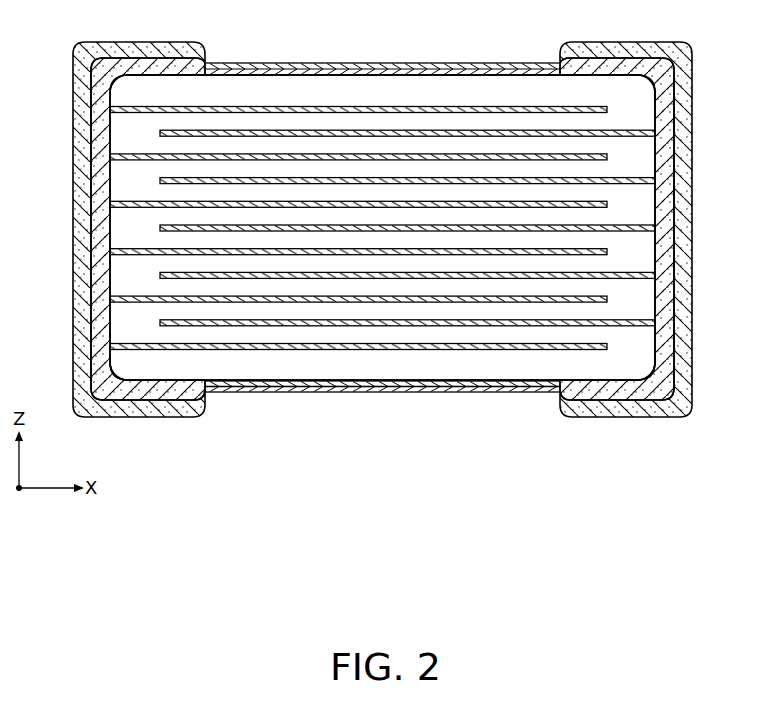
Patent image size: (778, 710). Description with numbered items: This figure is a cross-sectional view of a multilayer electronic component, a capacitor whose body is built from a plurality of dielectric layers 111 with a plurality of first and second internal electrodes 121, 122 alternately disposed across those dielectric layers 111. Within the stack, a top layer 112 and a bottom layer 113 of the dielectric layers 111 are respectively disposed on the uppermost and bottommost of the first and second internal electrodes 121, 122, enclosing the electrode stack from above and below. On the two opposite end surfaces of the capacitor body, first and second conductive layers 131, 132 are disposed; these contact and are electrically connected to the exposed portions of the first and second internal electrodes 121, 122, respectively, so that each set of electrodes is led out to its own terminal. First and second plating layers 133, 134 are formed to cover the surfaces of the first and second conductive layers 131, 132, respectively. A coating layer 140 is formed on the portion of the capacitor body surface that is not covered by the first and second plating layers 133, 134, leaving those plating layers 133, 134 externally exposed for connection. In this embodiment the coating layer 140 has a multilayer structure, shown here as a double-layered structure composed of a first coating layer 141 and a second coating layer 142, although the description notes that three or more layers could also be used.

The dielectric layer 111 is at (632, 105).
The top layer 112 is at (293, 93).
The bottom layer 113 is at (317, 367).
The first internal electrode 121 is at (372, 107).
The second internal electrode 122 is at (420, 131).
The first conductive layer 131 is at (163, 388).
The second conductive layer 132 is at (602, 394).
The first plating layer 133 is at (110, 410).
The second plating layer 134 is at (653, 418).
The coating layer 140 is at (382, 434).
The first coating layer 141 is at (443, 384).
The second coating layer 142 is at (475, 451).